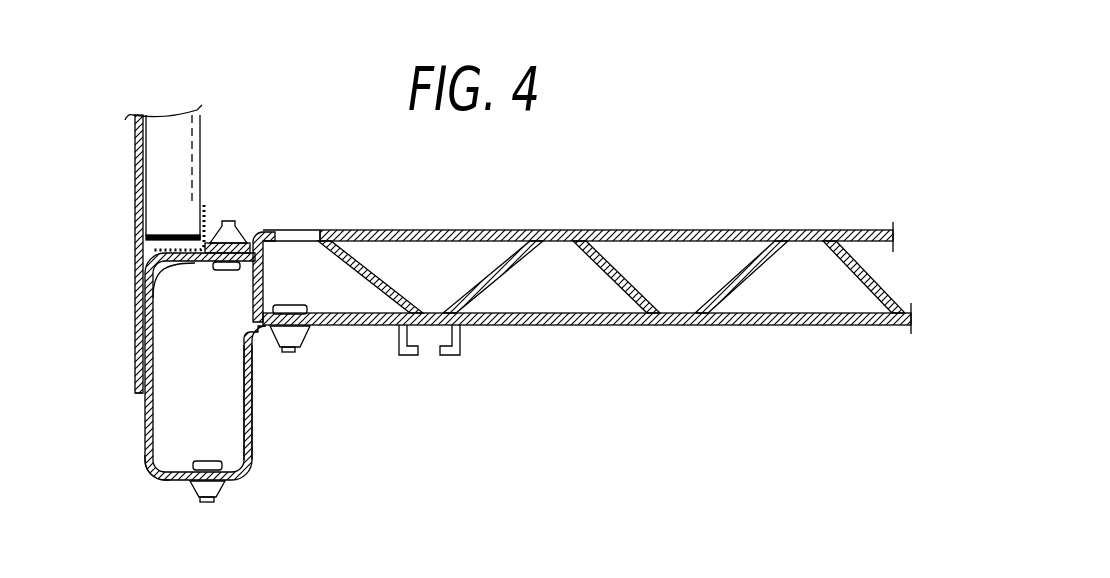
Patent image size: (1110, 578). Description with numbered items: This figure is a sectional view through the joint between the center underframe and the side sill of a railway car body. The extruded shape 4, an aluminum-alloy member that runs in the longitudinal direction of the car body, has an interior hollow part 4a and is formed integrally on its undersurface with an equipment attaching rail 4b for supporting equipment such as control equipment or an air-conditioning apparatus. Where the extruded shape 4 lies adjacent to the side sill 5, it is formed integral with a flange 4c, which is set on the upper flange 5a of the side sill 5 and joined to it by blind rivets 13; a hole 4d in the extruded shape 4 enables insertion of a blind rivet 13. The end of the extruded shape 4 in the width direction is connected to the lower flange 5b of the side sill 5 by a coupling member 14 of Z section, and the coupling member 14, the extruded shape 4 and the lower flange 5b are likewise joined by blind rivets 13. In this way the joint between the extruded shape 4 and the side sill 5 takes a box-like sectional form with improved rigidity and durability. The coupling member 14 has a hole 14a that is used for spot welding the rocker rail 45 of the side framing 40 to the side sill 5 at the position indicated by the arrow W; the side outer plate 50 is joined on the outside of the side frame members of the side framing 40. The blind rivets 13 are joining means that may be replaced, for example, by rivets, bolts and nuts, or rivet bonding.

The extruded shape 4 is at (672, 229).
The interior hollow part 4a is at (600, 304).
The equipment attaching rail 4b is at (456, 346).
The flange 4c is at (255, 238).
The hole 4d is at (298, 230).
The side sill 5 is at (145, 432).
The upper flange 5a is at (178, 263).
The lower flange 5b is at (153, 474).
The blind rivet 13 is at (228, 219).
The coupling member 14 is at (251, 445).
The hole 14a is at (251, 393).
The side framing 40 is at (130, 190).
The rocker rail 45 is at (203, 200).
The side outer plate 50 is at (134, 143).
The arrow indicating spot welding position W is at (131, 378).